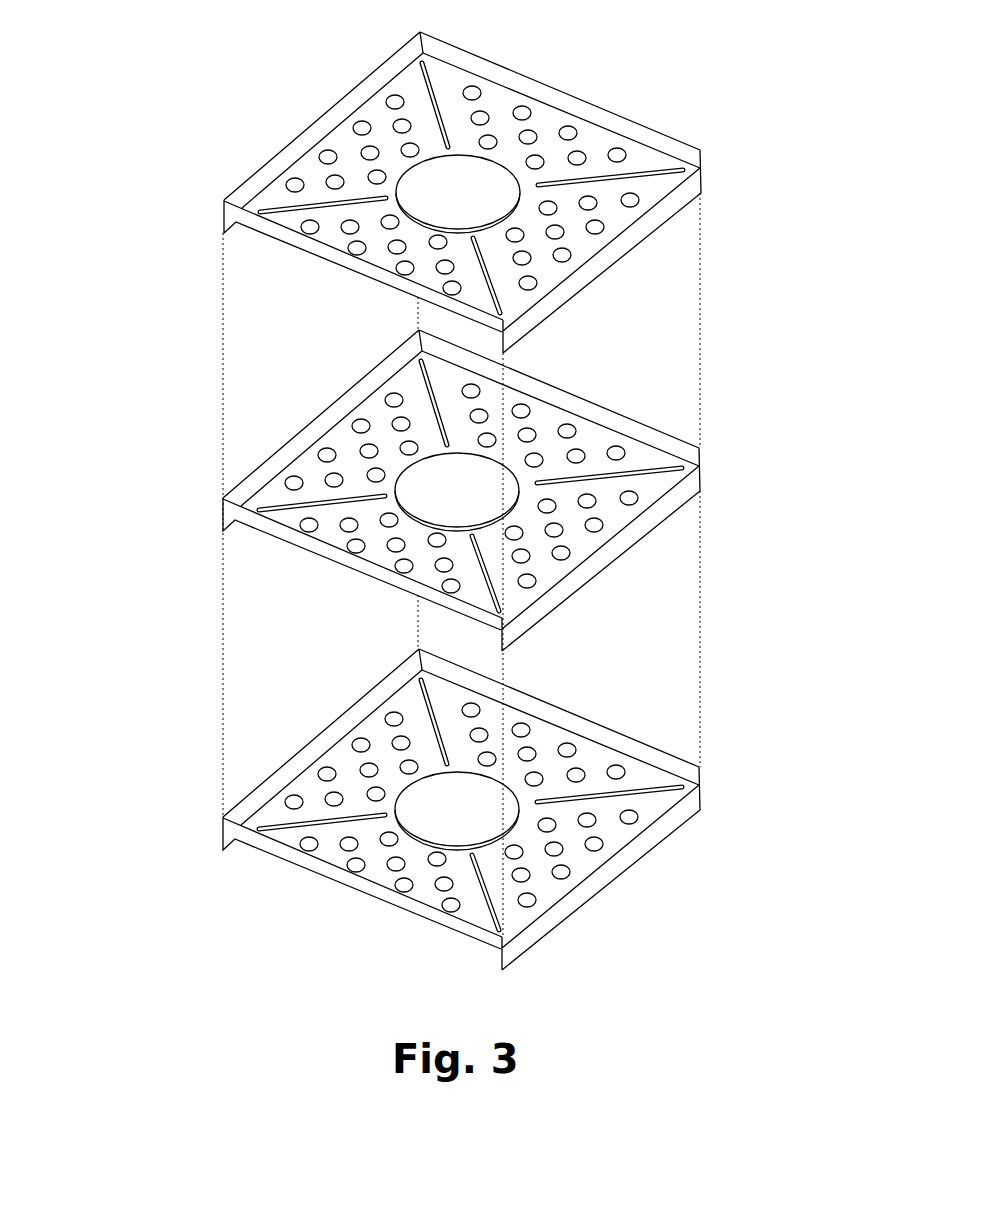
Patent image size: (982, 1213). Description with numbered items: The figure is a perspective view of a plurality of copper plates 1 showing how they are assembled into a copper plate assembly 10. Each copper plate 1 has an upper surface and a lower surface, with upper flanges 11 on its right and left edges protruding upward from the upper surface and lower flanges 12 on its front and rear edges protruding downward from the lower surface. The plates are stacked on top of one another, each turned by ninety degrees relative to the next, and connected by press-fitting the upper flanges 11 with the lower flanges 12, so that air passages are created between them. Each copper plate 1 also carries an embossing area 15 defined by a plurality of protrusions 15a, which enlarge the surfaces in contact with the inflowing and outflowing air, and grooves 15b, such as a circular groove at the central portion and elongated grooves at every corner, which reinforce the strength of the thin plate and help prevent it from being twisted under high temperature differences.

The copper plate assembly 10 is at (456, 497).
The copper plate 1 is at (452, 497).
The upper flange 11 is at (668, 131).
The lower flange 12 is at (603, 272).
The embossing area 15 is at (372, 465).
The protrusion 15a is at (361, 126).
The groove 15b is at (283, 204).